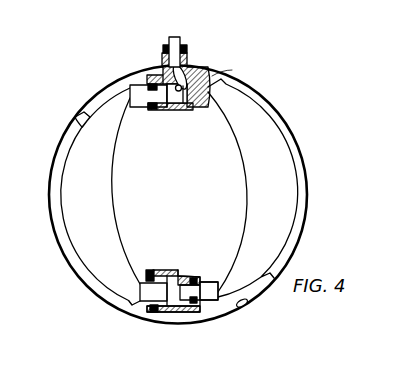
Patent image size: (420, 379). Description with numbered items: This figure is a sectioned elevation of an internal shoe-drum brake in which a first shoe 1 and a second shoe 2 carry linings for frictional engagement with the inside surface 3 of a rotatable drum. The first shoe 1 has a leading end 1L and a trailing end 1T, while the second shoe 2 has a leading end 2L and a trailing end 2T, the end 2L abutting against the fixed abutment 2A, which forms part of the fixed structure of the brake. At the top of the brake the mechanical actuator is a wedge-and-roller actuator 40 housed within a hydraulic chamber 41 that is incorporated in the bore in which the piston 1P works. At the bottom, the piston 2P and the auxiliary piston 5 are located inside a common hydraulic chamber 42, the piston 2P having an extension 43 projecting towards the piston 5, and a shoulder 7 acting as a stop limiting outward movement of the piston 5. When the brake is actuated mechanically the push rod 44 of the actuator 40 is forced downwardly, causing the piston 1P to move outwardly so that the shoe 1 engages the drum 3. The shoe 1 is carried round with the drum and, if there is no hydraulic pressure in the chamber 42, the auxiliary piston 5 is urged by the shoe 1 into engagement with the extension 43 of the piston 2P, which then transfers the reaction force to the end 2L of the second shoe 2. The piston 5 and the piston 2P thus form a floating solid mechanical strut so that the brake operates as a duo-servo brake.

The first shoe 1 is at (89, 211).
The leading end of first shoe 1L is at (106, 144).
The trailing end of first shoe 1T is at (117, 277).
The piston 1P is at (147, 88).
The second shoe 2 is at (276, 210).
The trailing end of second shoe 2T is at (256, 144).
The leading end of second shoe 2L is at (255, 276).
The fixed abutment 2A is at (214, 74).
The piston 2P is at (218, 284).
The inside surface of drum 3 is at (249, 302).
The auxiliary hydraulic piston 5 is at (143, 286).
The shoulder 7 is at (152, 272).
The wedge-and-roller actuator 40 is at (181, 76).
The hydraulic chamber 41 is at (183, 95).
The common hydraulic chamber 42 is at (172, 290).
The extension 43 is at (181, 281).
The push rod 44 is at (182, 38).